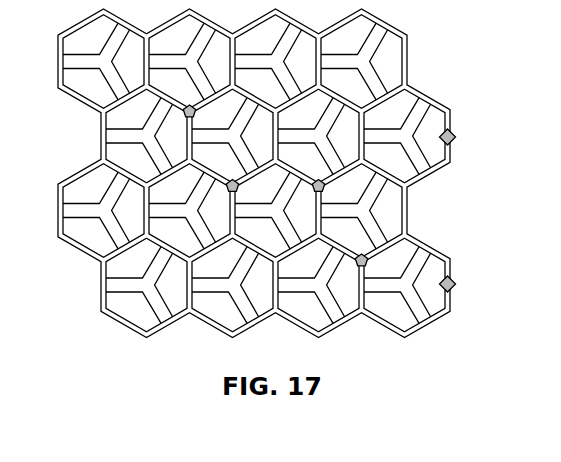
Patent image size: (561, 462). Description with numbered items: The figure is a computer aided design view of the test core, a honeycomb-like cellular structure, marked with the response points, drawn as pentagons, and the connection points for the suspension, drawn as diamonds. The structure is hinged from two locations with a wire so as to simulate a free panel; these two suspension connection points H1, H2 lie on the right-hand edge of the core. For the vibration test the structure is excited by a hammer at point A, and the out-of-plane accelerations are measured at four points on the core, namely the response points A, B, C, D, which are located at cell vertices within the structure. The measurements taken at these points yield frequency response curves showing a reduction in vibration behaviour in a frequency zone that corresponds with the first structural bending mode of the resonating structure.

The response point A is at (356, 242).
The response point B is at (311, 170).
The response point C is at (222, 170).
The response point D is at (180, 97).
The connection point for the suspension H1 is at (462, 151).
The connection point for the suspension H2 is at (462, 269).